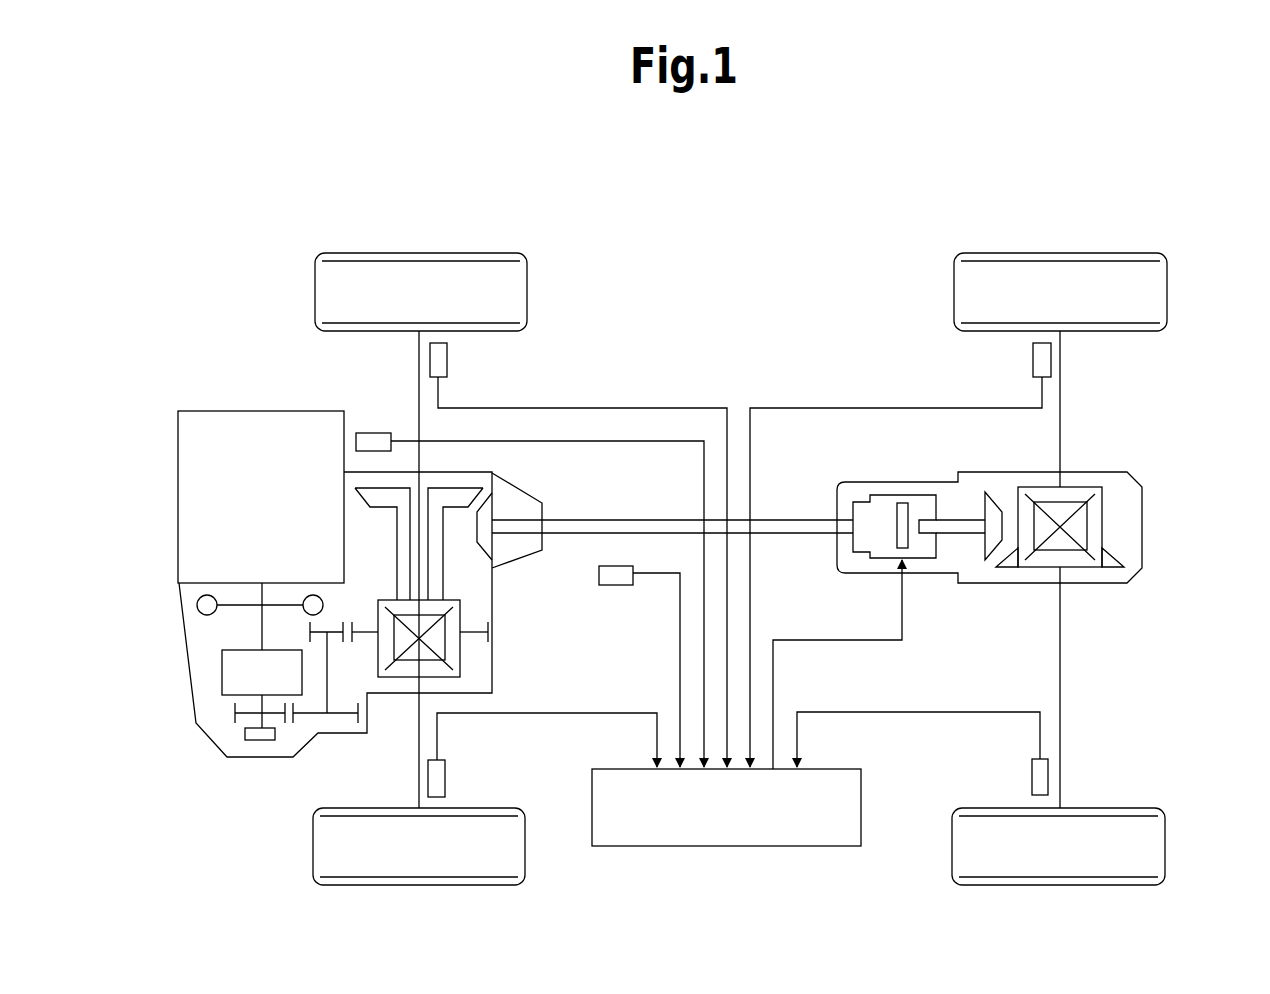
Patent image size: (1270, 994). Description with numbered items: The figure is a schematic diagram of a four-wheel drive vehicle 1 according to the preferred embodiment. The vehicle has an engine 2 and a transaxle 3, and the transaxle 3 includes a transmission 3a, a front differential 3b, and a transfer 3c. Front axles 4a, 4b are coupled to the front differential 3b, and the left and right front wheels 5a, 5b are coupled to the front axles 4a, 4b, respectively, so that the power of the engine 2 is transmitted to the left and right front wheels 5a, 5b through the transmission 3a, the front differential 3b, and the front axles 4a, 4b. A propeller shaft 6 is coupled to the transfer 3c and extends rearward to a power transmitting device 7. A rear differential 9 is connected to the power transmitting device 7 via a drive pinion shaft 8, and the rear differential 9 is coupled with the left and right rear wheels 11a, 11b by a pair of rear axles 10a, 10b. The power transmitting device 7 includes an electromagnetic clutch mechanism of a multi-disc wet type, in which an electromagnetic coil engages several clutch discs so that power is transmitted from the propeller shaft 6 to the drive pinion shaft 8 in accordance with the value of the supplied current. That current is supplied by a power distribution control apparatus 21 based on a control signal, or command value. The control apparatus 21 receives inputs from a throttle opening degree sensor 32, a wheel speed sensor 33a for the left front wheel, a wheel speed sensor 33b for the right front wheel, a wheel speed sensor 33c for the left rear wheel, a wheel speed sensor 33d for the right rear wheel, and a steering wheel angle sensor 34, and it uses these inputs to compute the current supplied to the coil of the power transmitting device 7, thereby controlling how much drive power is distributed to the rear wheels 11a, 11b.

The four-wheel drive vehicle 1 is at (1199, 236).
The engine 2 is at (262, 420).
The transaxle 3 is at (348, 636).
The transmission 3a is at (200, 634).
The front differential 3b is at (482, 663).
The transfer 3c is at (520, 505).
The front axle 4a is at (418, 758).
The front axle 4b is at (418, 356).
The left front wheel 5a is at (315, 850).
The right front wheel 5b is at (315, 289).
The propeller shaft 6 is at (630, 524).
The power transmitting device 7 is at (890, 504).
The drive pinion shaft 8 is at (975, 524).
The rear differential 9 is at (1092, 525).
The rear axle 10a is at (1062, 640).
The rear axle 10b is at (1063, 405).
The left rear wheel 11a is at (1160, 853).
The right rear wheel 11b is at (1160, 293).
The power distribution control apparatus 21 is at (861, 835).
The throttle opening degree sensor 32 is at (374, 433).
The wheel speed sensor 33a is at (446, 774).
The wheel speed sensor 33b is at (448, 358).
The wheel speed sensor 33c is at (1031, 776).
The wheel speed sensor 33d is at (1032, 360).
The steering wheel angle sensor 34 is at (625, 588).